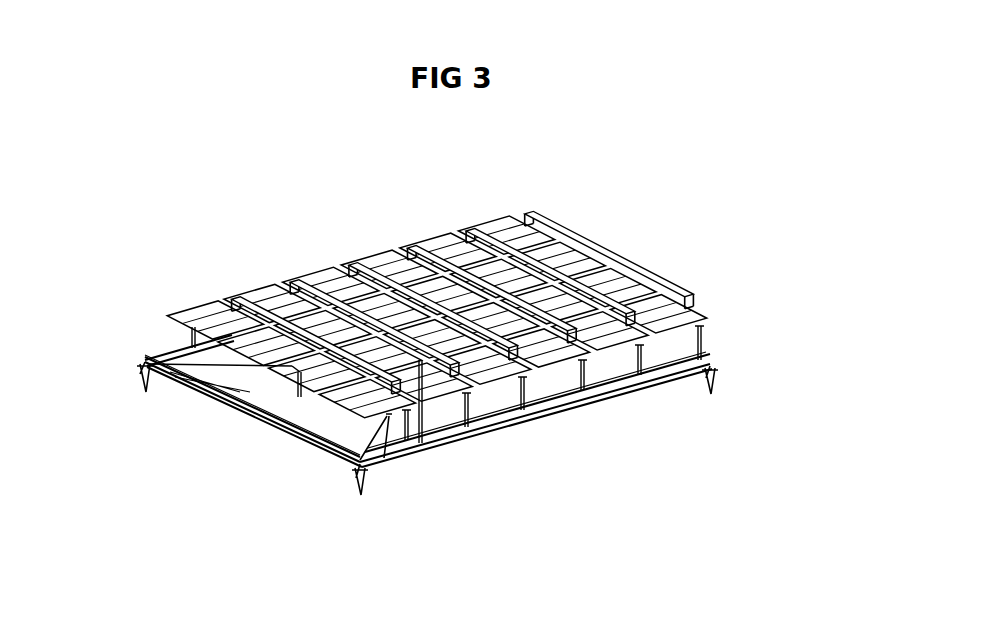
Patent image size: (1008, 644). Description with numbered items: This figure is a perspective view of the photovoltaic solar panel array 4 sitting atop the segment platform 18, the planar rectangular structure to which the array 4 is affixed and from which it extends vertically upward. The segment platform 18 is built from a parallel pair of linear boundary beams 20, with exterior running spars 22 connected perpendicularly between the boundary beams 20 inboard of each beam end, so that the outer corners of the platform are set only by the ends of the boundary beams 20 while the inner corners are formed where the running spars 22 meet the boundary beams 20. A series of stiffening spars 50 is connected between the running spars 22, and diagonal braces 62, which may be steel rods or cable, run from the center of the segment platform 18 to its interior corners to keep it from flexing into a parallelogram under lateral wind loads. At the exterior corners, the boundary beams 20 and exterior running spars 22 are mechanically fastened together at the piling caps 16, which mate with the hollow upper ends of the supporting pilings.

The solar panel array 4 is at (178, 312).
The piling cap 16 is at (353, 487).
The segment platform 18 is at (264, 458).
The boundary beam 20 is at (204, 398).
The exterior running spar 22 is at (523, 418).
The stiffening spar 50 is at (500, 417).
The diagonal brace 62 is at (626, 363).